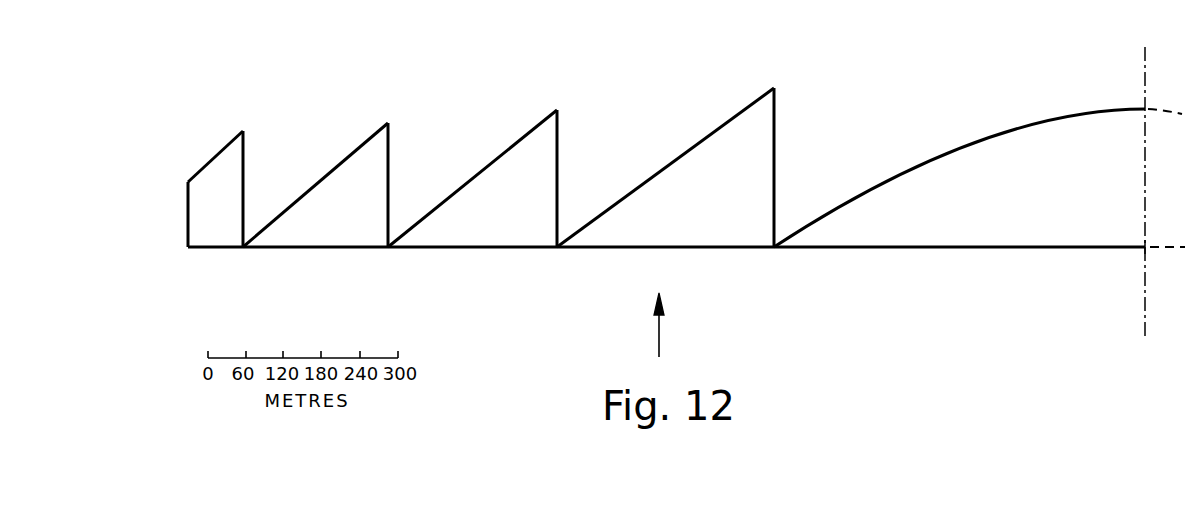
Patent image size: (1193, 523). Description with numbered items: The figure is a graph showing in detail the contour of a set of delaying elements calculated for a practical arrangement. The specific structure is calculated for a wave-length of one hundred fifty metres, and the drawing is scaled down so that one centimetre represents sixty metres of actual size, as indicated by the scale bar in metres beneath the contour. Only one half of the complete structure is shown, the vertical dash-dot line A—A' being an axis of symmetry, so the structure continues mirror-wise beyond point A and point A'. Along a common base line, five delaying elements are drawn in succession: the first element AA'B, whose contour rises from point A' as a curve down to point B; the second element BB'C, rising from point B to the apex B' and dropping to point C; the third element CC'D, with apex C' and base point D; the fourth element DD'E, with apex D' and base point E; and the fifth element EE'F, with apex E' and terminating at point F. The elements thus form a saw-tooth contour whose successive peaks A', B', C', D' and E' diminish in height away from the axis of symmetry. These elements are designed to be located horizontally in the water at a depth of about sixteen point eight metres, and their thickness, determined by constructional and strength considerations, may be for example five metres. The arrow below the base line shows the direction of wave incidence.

The point A on axis of symmetry A is at (1132, 260).
The point A' on axis of symmetry A' is at (1149, 93).
The point B is at (956, 196).
The point B' is at (776, 151).
The point C is at (661, 185).
The point C' is at (558, 162).
The point D is at (469, 196).
The point D' is at (391, 169).
The point E is at (312, 203).
The point E' is at (245, 176).
The point F is at (212, 207).